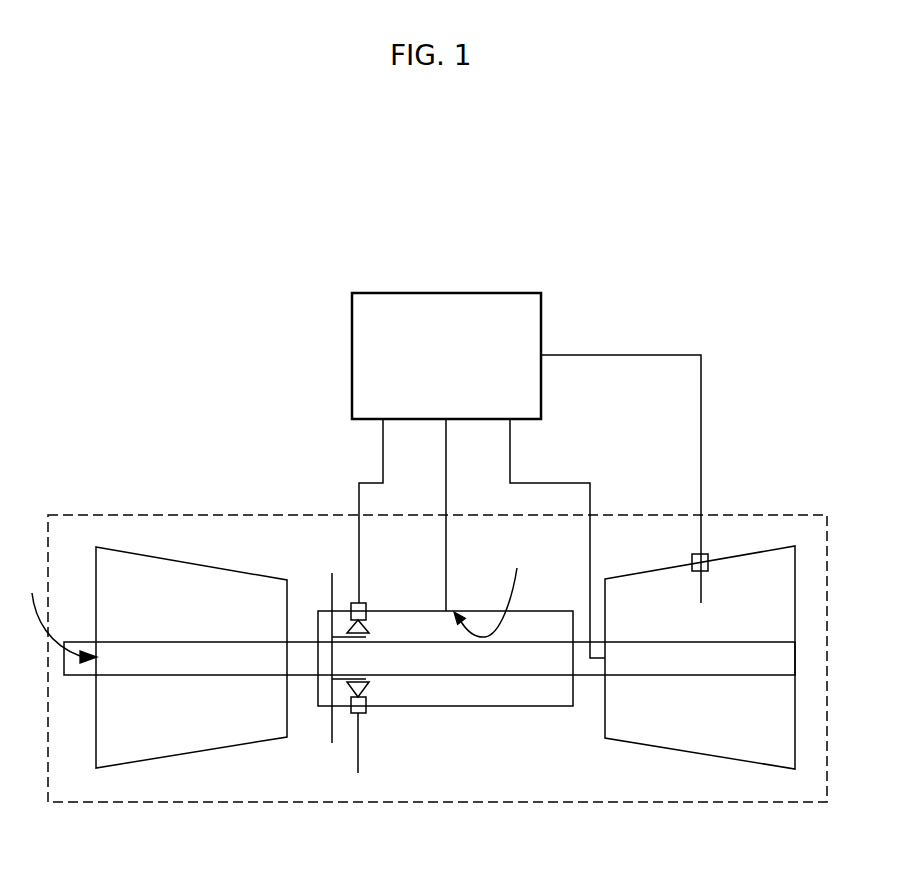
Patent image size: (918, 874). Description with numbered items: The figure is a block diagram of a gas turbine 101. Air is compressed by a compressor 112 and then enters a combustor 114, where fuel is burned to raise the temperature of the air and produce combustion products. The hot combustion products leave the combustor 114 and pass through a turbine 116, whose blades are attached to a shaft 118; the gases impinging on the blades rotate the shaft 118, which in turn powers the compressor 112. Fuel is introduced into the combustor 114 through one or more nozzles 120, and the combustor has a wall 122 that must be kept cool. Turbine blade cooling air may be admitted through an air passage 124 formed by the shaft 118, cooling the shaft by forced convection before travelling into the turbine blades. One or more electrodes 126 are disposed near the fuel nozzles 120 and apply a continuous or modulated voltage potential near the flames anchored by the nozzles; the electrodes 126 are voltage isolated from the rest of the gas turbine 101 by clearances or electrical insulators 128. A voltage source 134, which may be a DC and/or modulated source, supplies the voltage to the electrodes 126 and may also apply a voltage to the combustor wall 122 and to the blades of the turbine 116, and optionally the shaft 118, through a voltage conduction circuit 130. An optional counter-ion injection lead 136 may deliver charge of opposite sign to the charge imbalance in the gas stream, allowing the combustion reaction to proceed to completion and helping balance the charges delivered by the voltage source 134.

The gas turbine 101 is at (218, 133).
The compressor 112 is at (207, 750).
The combustor 114 is at (475, 611).
The turbine 116 is at (605, 738).
The shaft 118 is at (303, 676).
The nozzle 120 is at (332, 587).
The combustor wall 122 is at (495, 591).
The air passage 124 is at (61, 615).
The electrode 126 is at (370, 630).
The electrical insulator 128 is at (364, 603).
The voltage conduction circuit 130 is at (589, 568).
The voltage source 134 is at (429, 390).
The counter-ion injection lead 136 is at (701, 465).